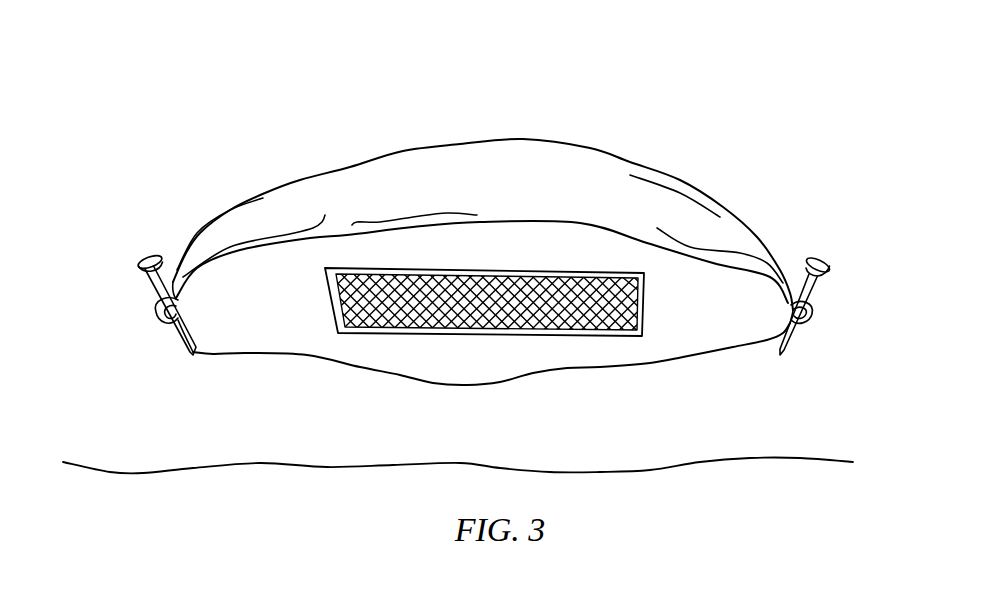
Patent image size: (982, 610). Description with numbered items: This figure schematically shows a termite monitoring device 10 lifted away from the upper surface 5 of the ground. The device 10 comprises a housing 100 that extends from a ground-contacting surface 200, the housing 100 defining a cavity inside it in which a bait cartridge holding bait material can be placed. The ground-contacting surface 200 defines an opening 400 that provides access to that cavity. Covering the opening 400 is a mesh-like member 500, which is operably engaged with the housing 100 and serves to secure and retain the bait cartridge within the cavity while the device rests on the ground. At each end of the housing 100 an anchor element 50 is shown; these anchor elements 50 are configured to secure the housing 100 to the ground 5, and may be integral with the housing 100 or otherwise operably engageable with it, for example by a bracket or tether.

The termite monitoring device 10 is at (345, 131).
The housing 100 is at (594, 198).
The ground-contacting surface 200 is at (708, 312).
The opening 400 is at (643, 318).
The mesh-like member 500 is at (462, 318).
The anchor element 50 is at (153, 284).
The upper surface of the ground 5 is at (138, 464).